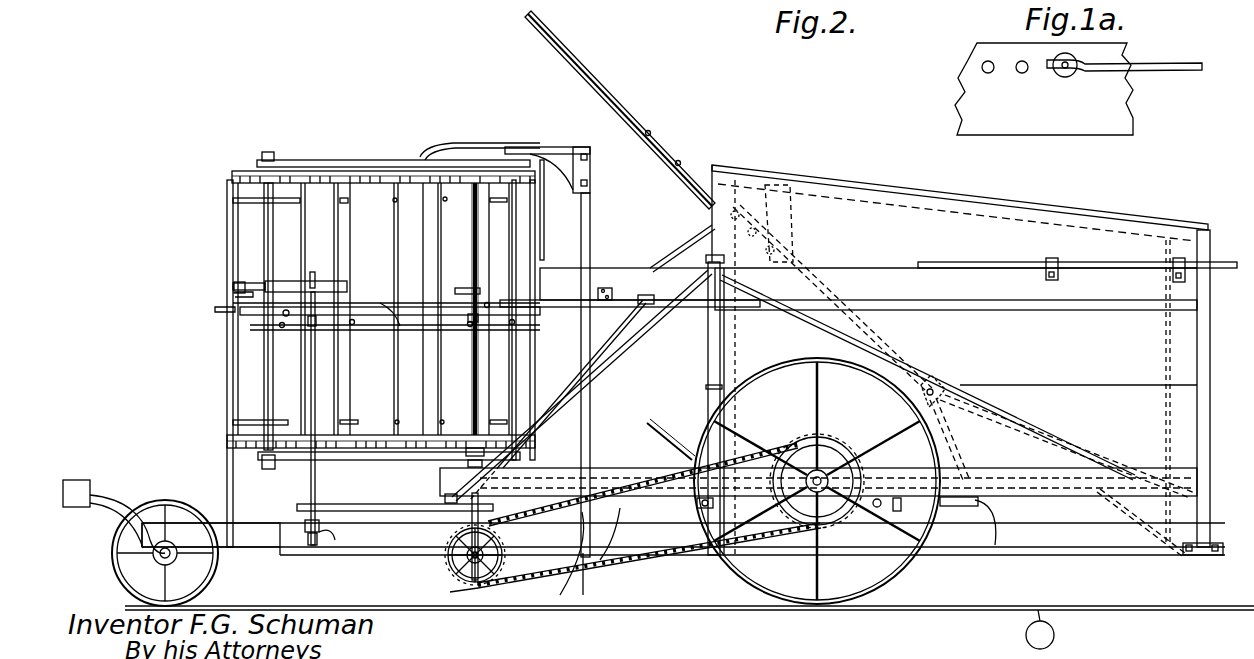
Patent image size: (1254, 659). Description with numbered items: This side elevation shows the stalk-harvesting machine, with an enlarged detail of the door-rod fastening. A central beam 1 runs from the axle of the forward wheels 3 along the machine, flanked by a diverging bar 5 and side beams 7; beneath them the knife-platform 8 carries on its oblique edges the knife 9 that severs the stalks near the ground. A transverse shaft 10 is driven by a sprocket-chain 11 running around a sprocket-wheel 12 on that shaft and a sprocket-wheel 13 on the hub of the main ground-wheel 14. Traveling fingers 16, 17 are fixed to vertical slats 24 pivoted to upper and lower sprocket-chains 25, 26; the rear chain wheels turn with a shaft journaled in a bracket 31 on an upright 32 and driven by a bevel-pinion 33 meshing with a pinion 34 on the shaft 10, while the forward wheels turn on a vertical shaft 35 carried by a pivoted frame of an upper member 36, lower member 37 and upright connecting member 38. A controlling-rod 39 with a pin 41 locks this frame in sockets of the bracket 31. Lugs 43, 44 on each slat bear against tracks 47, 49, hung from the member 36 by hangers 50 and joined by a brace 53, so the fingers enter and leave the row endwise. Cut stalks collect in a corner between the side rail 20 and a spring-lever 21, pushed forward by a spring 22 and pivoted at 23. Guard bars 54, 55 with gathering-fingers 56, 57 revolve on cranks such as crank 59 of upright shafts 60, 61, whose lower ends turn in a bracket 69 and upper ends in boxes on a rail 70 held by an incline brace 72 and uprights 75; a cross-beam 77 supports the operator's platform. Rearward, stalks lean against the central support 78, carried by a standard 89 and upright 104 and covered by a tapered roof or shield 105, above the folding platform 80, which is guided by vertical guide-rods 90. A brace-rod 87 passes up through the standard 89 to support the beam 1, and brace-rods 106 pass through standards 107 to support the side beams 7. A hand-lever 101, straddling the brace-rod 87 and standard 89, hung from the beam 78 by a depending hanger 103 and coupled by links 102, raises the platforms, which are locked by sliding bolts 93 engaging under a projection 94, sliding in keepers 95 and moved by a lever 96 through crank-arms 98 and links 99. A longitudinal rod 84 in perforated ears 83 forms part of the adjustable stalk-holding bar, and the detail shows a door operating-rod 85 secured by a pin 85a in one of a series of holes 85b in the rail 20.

In FIG. 2, the beam or scantling 1 is at (982, 550).
In FIG. 2, the forward pair of wheels 3 is at (163, 500).
In FIG. 2, the scantling or bar 5 is at (238, 548).
In FIG. 2, the side beams 7 is at (540, 470).
In FIG. 2, the knife-platform 8 is at (378, 557).
In FIG. 2, the stalk cutter or knife 9 is at (275, 541).
In FIG. 2, the shaft 10 is at (462, 578).
In FIG. 2, the sprocket-chain 11 is at (525, 575).
In FIG. 2, the sprocket-wheel 12 is at (448, 568).
In FIG. 2, the sprocket-wheel 13 is at (800, 526).
In FIG. 2, the main ground-wheel 14 is at (880, 580).
In FIG. 2, the traveling finger 16 is at (240, 201).
In FIG. 2, the traveling finger 17 is at (393, 203).
In FIG. 2, the side board or rail 20 is at (603, 266).
In FIG. 1a, the side board or rail 20 is at (963, 95).
In FIG. 2, the spring-lever 21 is at (568, 308).
In FIG. 2, the spring 22 is at (643, 297).
In FIG. 2, the pivot 23 is at (618, 308).
In FIG. 2, the vertical slats 24 is at (226, 235).
In FIG. 2, the sprocket-chain 25 is at (372, 170).
In FIG. 2, the sprocket-chain 26 is at (292, 458).
In FIG. 2, the bracket 31 is at (545, 147).
In FIG. 2, the upright 32 is at (578, 205).
In FIG. 2, the bevel-pinion 33 is at (520, 525).
In FIG. 2, the pinion 34 is at (520, 543).
In FIG. 2, the vertical shaft 35 is at (270, 152).
In FIG. 2, the upper horizontal bar or member 36 is at (318, 160).
In FIG. 2, the lower horizontal bar or member 37 is at (397, 461).
In FIG. 2, the upright connecting member 38 is at (534, 370).
In FIG. 2, the controlling-rod 39 is at (490, 143).
In FIG. 2, the pin or catch 41 is at (244, 284).
In FIG. 2, the lug or projection 43 is at (490, 300).
In FIG. 2, the lug or projection 44 is at (313, 272).
In FIG. 2, the track or rail 47 is at (287, 317).
In FIG. 2, the track or rail 49 is at (278, 281).
In FIG. 2, the hangers 50 is at (420, 247).
In FIG. 2, the brace 53 is at (215, 309).
In FIG. 2, the bar 54 is at (383, 304).
In FIG. 2, the bar 55 is at (470, 324).
In FIG. 2, the gathering-fingers 56 is at (400, 327).
In FIG. 2, the gathering-fingers 57 is at (397, 330).
In FIG. 2, the crank 59 is at (318, 328).
In FIG. 2, the upright shaft 60 is at (316, 382).
In FIG. 2, the upright shaft 61 is at (474, 375).
In FIG. 2, the bracket 69 is at (336, 538).
In FIG. 2, the bar or rail 70 is at (460, 288).
In FIG. 2, the incline brace 72 is at (234, 500).
In FIG. 2, the uprights 75 is at (592, 410).
In FIG. 2, the cross-beam 77 is at (606, 560).
In FIG. 2, the central support or rest 78 is at (1020, 208).
In FIG. 2, the folding platform 80 is at (1040, 629).
In FIG. 2, the eyes or perforated ears 83 is at (1176, 258).
In FIG. 2, the longitudinal rod 84 is at (1077, 253).
In FIG. 1a, the operating-rod 85 is at (1166, 72).
In FIG. 1a, the pin 85a is at (1058, 72).
In FIG. 1a, the holes 85b is at (1018, 60).
In FIG. 2, the central brace-rod 87 is at (627, 322).
In FIG. 2, the standard 89 is at (708, 224).
In FIG. 2, the vertical guide-rods 90 is at (738, 352).
In FIG. 2, the sliding bolts 93 is at (958, 508).
In FIG. 2, the projection 94 is at (975, 570).
In FIG. 2, the keepers 95 is at (893, 512).
In FIG. 2, the lever 96 is at (662, 430).
In FIG. 2, the depending crank-arm 98 is at (700, 503).
In FIG. 2, the link 99 is at (760, 510).
In FIG. 2, the hand-lever 101 is at (620, 110).
In FIG. 2, the links 102 is at (958, 440).
In FIG. 2, the depending hanger 103 is at (784, 222).
In FIG. 2, the upright 104 is at (1200, 345).
In FIG. 2, the roof or shield 105 is at (1018, 311).
In FIG. 2, the brace-rods 106 is at (1040, 426).
In FIG. 2, the standards 107 is at (706, 388).